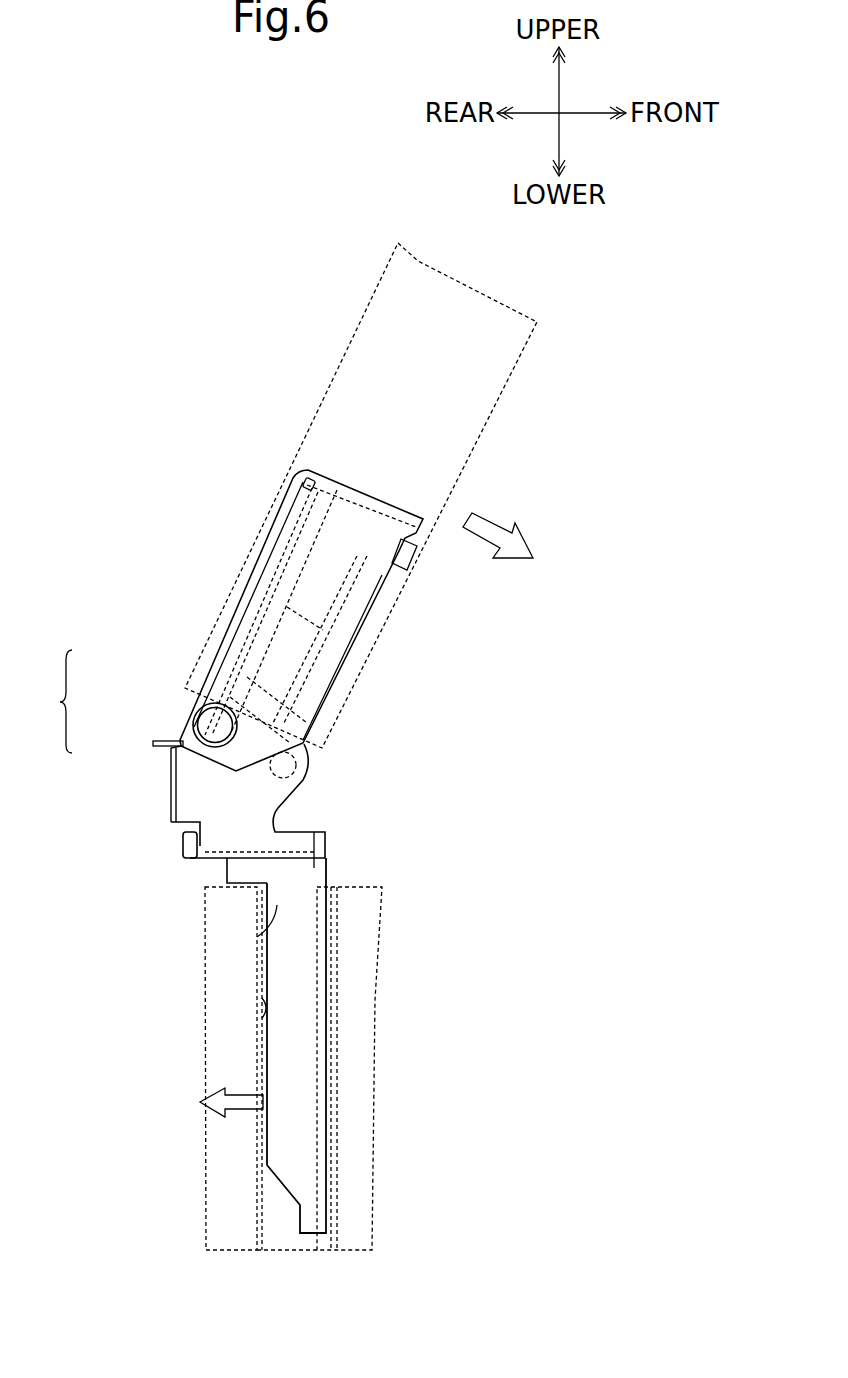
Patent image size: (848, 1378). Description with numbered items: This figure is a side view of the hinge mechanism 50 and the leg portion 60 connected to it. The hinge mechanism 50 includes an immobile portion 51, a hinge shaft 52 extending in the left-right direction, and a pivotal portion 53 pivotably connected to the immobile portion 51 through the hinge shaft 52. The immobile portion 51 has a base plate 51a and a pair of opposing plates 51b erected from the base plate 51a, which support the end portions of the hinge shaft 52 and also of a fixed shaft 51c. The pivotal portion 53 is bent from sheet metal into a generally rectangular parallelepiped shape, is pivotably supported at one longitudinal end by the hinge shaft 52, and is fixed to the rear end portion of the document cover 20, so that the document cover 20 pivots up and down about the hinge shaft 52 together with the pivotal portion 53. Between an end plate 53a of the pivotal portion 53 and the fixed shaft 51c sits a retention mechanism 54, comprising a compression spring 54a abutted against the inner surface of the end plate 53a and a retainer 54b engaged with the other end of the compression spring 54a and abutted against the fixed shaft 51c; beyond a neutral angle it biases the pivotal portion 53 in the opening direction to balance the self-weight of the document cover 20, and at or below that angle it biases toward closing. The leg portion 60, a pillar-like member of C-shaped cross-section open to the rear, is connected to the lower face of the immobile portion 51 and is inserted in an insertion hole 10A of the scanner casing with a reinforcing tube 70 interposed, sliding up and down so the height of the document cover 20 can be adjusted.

The insertion hole 10A is at (265, 1020).
The document cover 20 is at (347, 332).
The hinge mechanism 50 is at (48, 701).
The immobile portion 51 is at (167, 773).
The base plate 51a is at (183, 840).
The opposing plates 51b is at (210, 798).
The fixed shaft 51c is at (317, 770).
The hinge shaft 52 is at (193, 734).
The pivotal portion 53 is at (186, 700).
The end plate 53a is at (378, 497).
The retention mechanism 54 is at (293, 543).
The compression spring 54a is at (261, 545).
The retainer 54b is at (215, 645).
The leg portion 60 is at (330, 970).
The reinforcing tube 70 is at (257, 937).